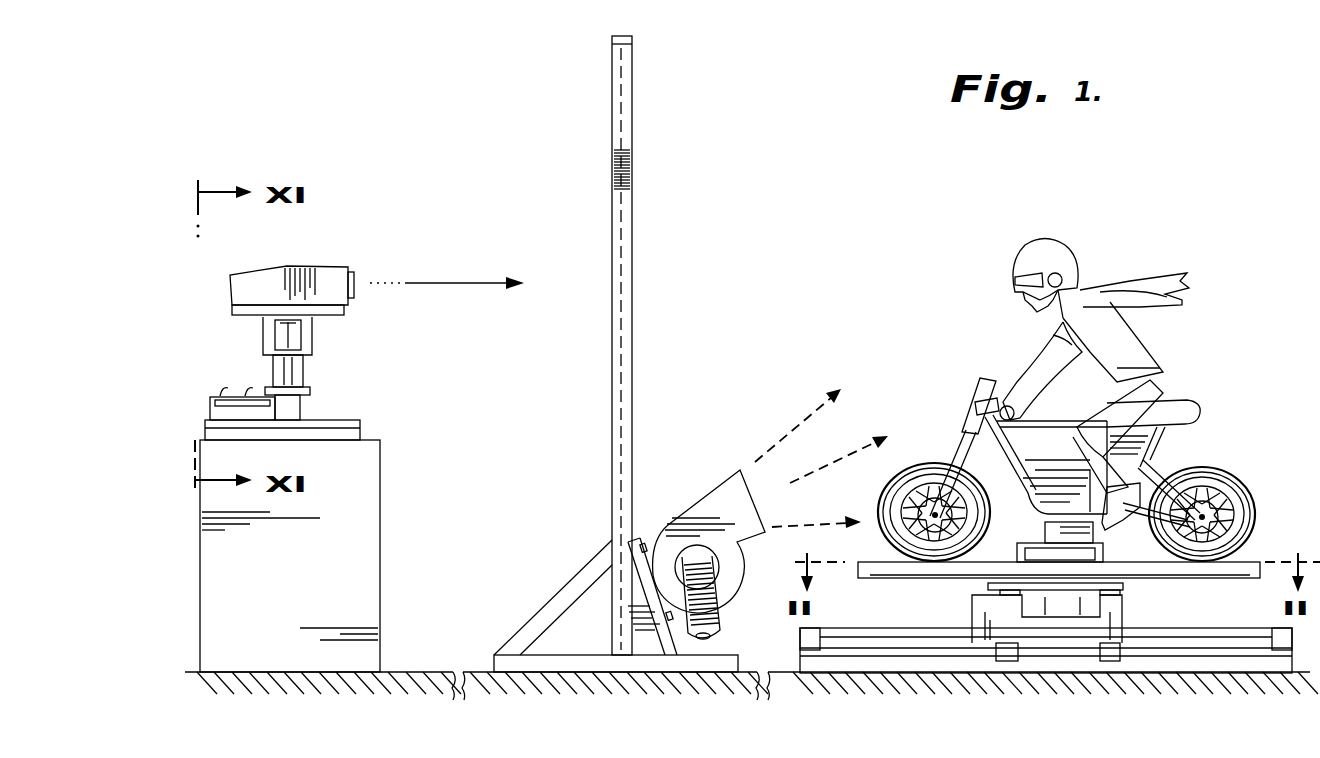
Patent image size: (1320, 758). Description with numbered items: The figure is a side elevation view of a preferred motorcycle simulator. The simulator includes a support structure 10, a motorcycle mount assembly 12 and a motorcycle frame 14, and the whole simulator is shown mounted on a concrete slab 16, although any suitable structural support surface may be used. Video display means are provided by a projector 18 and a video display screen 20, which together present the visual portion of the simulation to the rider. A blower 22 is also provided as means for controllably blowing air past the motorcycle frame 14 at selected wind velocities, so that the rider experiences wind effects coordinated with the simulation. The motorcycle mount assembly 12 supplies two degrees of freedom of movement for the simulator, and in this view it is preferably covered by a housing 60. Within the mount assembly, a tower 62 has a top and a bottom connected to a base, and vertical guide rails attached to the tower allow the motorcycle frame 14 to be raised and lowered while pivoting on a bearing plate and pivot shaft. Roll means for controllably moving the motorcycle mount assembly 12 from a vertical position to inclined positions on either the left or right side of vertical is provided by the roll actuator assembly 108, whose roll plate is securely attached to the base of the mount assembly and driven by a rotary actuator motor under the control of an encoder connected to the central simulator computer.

The support structure 10 is at (926, 617).
The motorcycle mount assembly 12 is at (1148, 598).
The motorcycle frame 14 is at (1068, 401).
The concrete slab 16 is at (432, 675).
The projector 18 is at (352, 382).
The video display screen 20 is at (632, 123).
The blower 22 is at (706, 512).
The housing 60 is at (1030, 455).
The tower 62 is at (1045, 528).
The roll actuator assembly 108 is at (1095, 528).